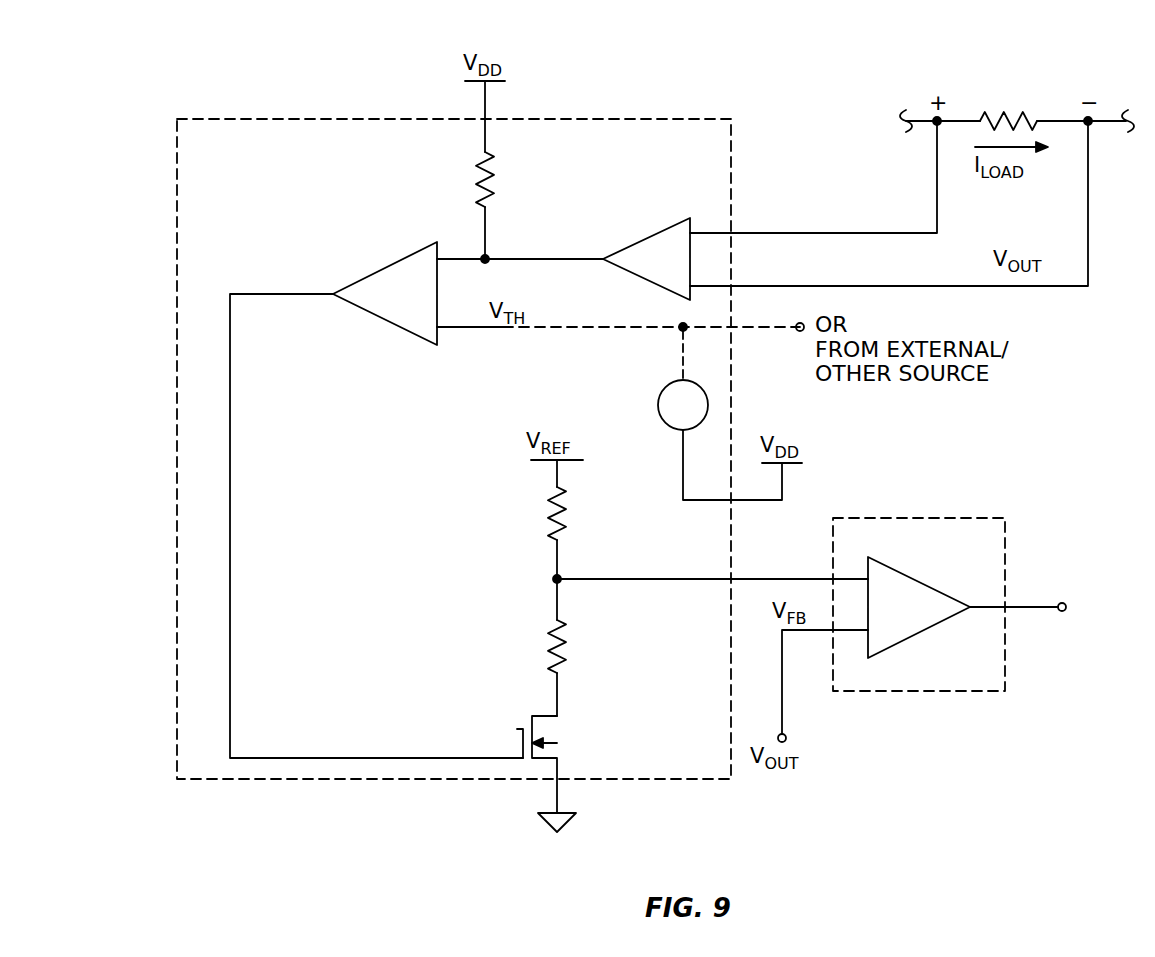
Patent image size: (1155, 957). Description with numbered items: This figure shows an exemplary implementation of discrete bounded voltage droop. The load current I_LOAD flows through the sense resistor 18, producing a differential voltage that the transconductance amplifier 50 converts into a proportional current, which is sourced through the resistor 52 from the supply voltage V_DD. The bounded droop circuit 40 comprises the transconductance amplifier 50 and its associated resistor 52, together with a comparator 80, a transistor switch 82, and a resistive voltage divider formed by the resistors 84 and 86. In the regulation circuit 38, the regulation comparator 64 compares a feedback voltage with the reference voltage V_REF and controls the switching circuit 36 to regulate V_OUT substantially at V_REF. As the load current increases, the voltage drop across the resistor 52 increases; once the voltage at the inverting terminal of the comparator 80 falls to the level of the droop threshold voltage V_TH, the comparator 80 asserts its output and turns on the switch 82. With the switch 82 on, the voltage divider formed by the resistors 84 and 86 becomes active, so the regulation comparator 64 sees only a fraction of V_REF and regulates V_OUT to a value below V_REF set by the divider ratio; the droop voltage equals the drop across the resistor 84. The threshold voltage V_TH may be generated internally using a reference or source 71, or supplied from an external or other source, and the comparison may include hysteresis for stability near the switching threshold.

The sense resistor 18 is at (1015, 108).
The switching circuit 36 is at (1052, 607).
The regulation circuit 38 is at (1007, 556).
The bounded droop circuit 40 is at (731, 152).
The transconductance amplifier 50 is at (660, 229).
The resistor 52 is at (490, 198).
The regulation comparator 64 is at (897, 567).
The reference or source 71 is at (706, 398).
The comparator 80 is at (408, 333).
The transistor switch 82 is at (527, 722).
The resistor 84 is at (570, 503).
The resistor 86 is at (570, 636).